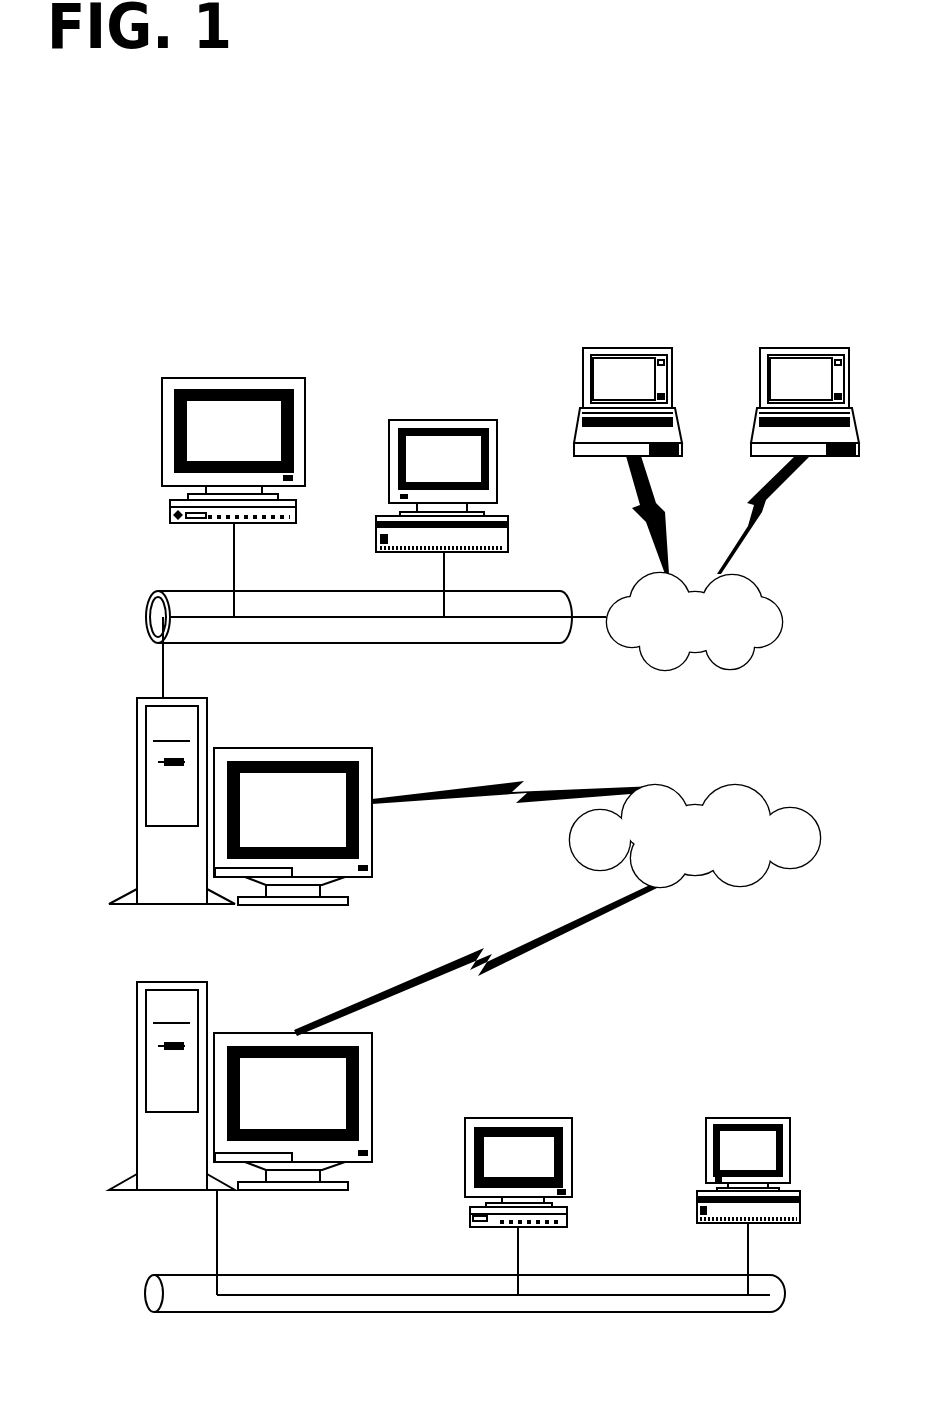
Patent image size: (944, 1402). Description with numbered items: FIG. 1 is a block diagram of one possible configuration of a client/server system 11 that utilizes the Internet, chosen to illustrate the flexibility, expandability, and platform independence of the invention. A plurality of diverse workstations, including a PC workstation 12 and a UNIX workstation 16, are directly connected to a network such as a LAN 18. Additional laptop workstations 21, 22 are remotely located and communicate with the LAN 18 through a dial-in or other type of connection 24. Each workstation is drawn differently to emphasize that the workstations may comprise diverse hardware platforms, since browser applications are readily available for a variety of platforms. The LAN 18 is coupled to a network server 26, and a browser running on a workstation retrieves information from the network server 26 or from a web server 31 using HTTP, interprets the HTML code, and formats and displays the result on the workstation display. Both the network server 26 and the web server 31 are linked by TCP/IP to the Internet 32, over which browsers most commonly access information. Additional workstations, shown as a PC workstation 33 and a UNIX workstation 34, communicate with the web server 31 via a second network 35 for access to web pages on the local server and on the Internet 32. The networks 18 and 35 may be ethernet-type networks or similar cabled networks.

The network system 11 is at (572, 245).
The workstation 12 is at (160, 450).
The workstation 16 is at (508, 521).
The LAN 18 is at (395, 640).
The workstation 21 is at (673, 402).
The workstation 22 is at (761, 402).
The dial-in connection 24 is at (668, 670).
The network server 26 is at (206, 690).
The web server 31 is at (221, 1013).
The Internet 32 is at (730, 786).
The workstation 33 is at (572, 1152).
The workstation 34 is at (707, 1173).
The network 35 is at (705, 1273).